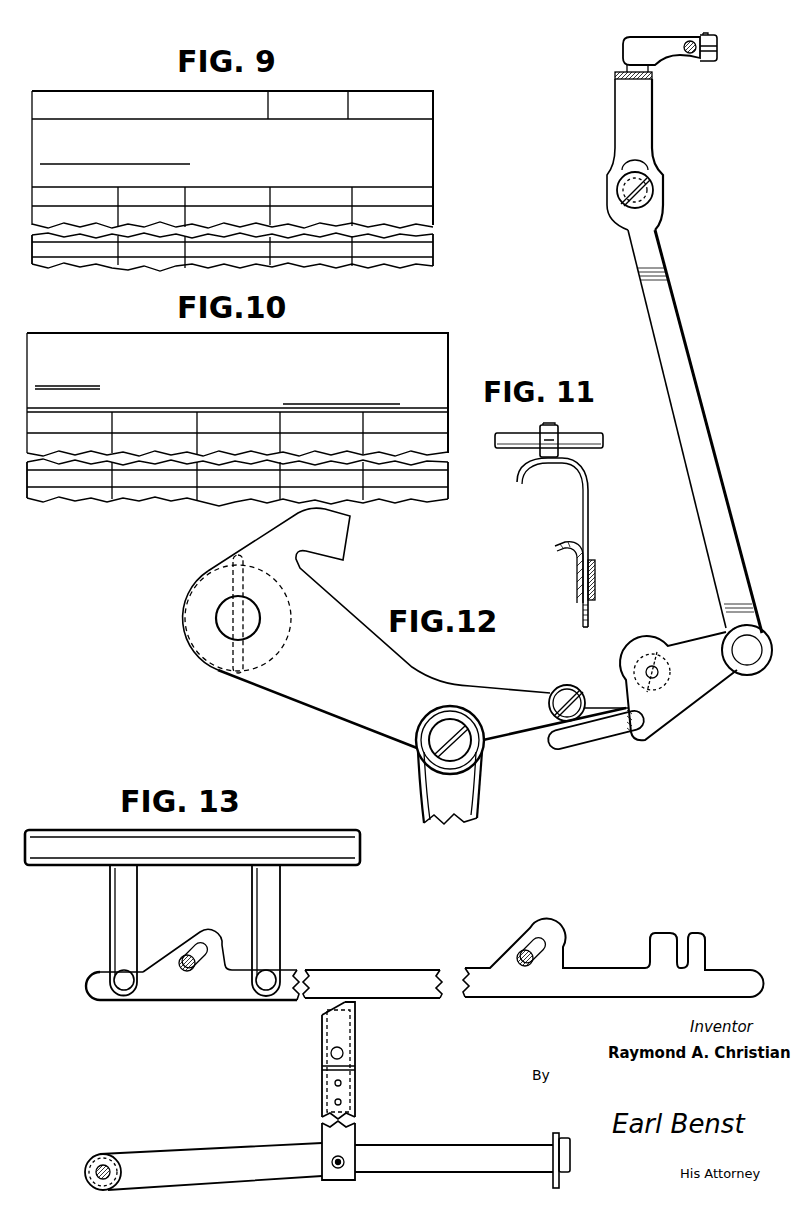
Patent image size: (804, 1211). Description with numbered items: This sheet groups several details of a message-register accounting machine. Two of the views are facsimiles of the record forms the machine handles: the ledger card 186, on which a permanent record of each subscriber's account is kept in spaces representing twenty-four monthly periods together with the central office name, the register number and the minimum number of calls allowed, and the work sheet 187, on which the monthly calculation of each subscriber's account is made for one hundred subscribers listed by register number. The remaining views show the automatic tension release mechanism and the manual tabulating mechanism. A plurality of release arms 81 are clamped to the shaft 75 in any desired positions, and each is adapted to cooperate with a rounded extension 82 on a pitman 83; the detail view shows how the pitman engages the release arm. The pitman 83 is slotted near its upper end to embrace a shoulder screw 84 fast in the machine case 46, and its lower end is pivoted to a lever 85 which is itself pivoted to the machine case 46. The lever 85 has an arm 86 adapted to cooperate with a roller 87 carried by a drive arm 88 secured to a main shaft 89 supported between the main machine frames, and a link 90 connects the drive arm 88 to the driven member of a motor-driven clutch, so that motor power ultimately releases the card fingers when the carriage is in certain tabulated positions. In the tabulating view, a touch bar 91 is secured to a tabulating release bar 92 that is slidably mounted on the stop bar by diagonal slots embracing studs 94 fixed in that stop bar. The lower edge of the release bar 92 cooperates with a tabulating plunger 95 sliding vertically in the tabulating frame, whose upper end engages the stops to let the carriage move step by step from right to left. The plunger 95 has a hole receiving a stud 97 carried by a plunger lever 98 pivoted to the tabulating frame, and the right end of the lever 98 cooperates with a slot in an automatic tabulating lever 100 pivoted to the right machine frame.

In FIG. 9, the ledger card 186 is at (433, 133).
In FIG. 10, the work sheet 187 is at (433, 356).
In FIG. 11, the shaft 75 is at (600, 438).
In FIG. 12, the shaft 75 is at (700, 58).
In FIG. 11, the release arms 81 is at (560, 453).
In FIG. 12, the release arms 81 is at (623, 50).
In FIG. 11, the rounded extension 82 is at (553, 466).
In FIG. 12, the rounded extension 82 is at (618, 70).
In FIG. 11, the machine case 46 is at (560, 550).
In FIG. 11, the shoulder screw 84 is at (594, 577).
In FIG. 12, the shoulder screw 84 is at (650, 188).
In FIG. 11, the pitman 83 is at (592, 622).
In FIG. 12, the pitman 83 is at (672, 328).
In FIG. 12, the lever 85 is at (682, 652).
In FIG. 12, the arm 86 is at (600, 745).
In FIG. 12, the roller 87 is at (562, 686).
In FIG. 12, the drive arm 88 is at (497, 693).
In FIG. 12, the main shaft 89 is at (246, 608).
In FIG. 12, the link 90 is at (458, 780).
In FIG. 13, the touch bar 91 is at (255, 840).
In FIG. 13, the studs 94 is at (185, 955).
In FIG. 13, the tabulating release bar 92 is at (373, 976).
In FIG. 13, the tabulating plunger 95 is at (345, 1020).
In FIG. 13, the stud 97 is at (345, 1157).
In FIG. 13, the plunger lever 98 is at (441, 1150).
In FIG. 13, the automatic tabulating lever 100 is at (553, 1136).